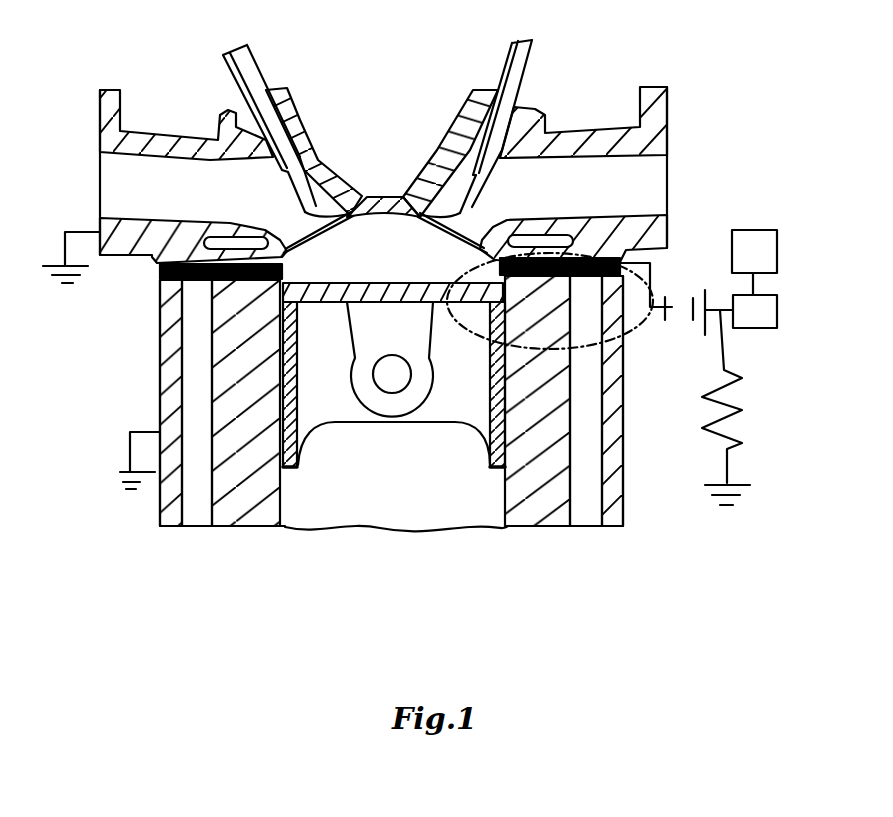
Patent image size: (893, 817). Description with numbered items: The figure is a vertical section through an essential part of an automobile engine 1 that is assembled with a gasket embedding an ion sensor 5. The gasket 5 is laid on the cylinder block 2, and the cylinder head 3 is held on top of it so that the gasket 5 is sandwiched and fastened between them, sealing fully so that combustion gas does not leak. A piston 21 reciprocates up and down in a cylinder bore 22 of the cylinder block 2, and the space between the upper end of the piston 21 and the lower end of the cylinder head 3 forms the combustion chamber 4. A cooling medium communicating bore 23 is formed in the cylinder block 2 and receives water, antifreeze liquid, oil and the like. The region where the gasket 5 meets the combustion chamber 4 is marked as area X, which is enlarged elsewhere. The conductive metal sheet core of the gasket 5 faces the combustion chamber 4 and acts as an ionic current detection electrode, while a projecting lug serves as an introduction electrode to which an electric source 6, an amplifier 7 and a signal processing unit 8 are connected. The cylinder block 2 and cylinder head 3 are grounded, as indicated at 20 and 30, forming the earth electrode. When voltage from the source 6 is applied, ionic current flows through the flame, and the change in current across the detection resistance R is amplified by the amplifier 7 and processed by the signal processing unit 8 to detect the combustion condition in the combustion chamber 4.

The engine 1 is at (588, 105).
The cylinder block 2 is at (623, 490).
The cylinder head 3 is at (307, 135).
The combustion chamber 4 is at (384, 236).
The gasket embedding an ion sensor 5 is at (148, 279).
The electric source 6 is at (682, 335).
The amplifier 7 is at (765, 328).
The signal processing unit 8 is at (748, 231).
The ground of cylinder block 20 is at (120, 458).
The piston 21 is at (300, 390).
The cylinder bore 22 is at (377, 510).
The cooling medium communicating bore 23 is at (200, 513).
The ground of cylinder head 30 is at (56, 262).
The area X is at (637, 316).
The detection resistance R is at (737, 412).